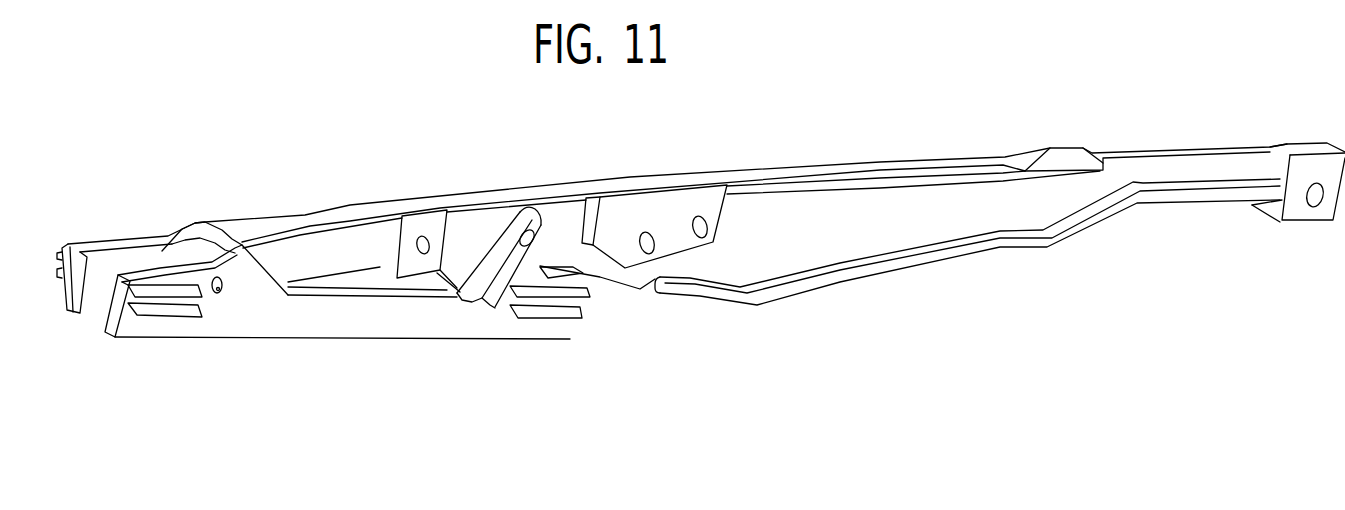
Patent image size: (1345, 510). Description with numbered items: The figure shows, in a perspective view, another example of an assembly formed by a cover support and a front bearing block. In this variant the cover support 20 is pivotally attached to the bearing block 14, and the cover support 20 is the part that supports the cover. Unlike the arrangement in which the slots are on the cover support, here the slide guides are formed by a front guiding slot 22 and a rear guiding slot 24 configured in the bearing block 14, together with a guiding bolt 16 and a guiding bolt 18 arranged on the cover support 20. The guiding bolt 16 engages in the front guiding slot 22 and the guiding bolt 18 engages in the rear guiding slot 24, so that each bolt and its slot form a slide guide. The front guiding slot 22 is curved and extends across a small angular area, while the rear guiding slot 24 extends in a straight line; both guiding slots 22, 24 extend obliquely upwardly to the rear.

The front bearing block 14 is at (342, 343).
The guiding bolt 16 is at (239, 329).
The guiding bolt 18 is at (528, 214).
The cover support 20 is at (701, 202).
The front guiding slot 22 is at (158, 370).
The rear guiding slot 24 is at (528, 364).